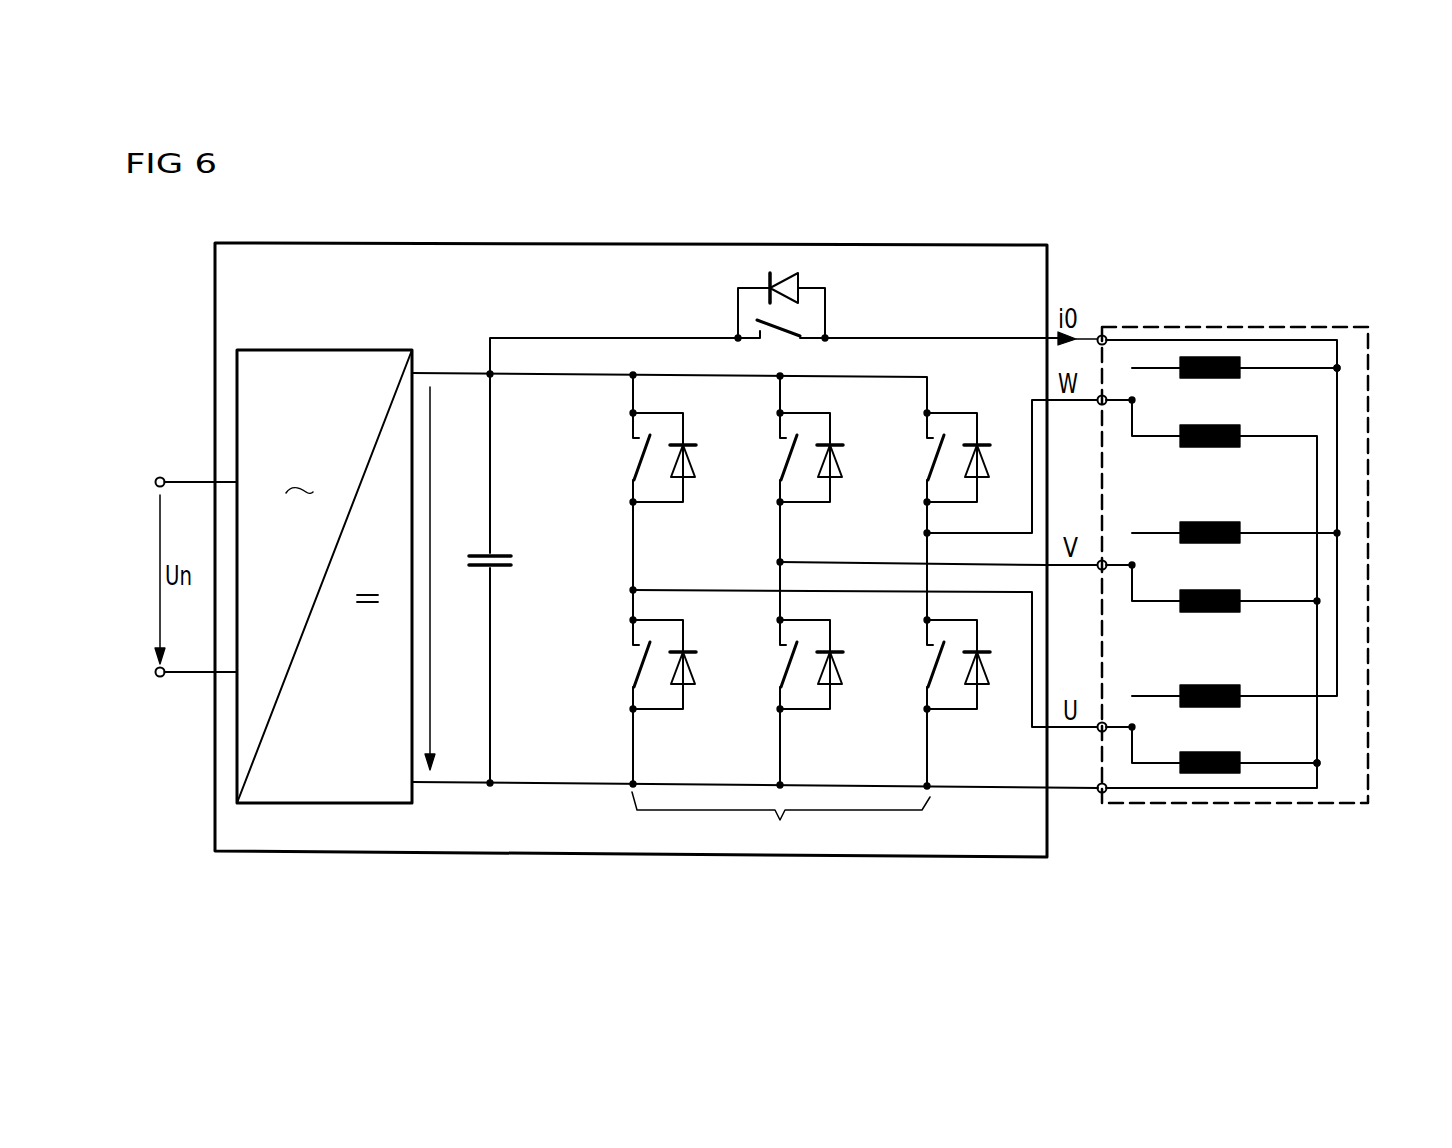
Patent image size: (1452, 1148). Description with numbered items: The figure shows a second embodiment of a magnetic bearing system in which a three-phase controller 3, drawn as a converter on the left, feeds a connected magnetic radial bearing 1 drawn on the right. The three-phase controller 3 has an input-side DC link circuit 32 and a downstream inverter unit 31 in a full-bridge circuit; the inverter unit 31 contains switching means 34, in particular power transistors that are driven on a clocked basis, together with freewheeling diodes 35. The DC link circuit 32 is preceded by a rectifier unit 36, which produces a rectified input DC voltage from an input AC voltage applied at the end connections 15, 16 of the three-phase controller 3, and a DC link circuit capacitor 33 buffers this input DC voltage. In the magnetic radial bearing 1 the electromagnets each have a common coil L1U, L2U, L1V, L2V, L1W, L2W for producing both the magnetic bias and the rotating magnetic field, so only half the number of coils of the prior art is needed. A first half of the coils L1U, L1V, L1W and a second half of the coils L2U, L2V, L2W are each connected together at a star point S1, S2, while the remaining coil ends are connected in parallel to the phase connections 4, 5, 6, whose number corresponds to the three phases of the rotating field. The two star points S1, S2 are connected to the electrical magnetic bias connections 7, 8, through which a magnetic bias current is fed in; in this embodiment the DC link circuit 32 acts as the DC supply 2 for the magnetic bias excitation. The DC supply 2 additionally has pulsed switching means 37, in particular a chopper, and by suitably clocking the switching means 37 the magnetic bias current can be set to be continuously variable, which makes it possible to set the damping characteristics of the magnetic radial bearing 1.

The magnetic radial bearing 1 is at (1261, 522).
The DC supply 2 is at (755, 580).
The three-phase controller 3 is at (635, 243).
The phase connection 4 is at (1099, 733).
The phase connection 5 is at (1099, 571).
The phase connection 6 is at (1100, 406).
The electrical magnetic bias connection 7 is at (1099, 795).
The electrical magnetic bias connection 8 is at (1100, 333).
The end connection 15 is at (160, 680).
The end connection 16 is at (160, 476).
The inverter unit 31 is at (780, 614).
The DC link circuit 32 is at (755, 528).
The DC link circuit capacitor 33 is at (500, 553).
The switching means 34 is at (640, 460).
The freewheeling diode 35 is at (783, 278).
The rectifier unit 36 is at (328, 349).
The switching means 37 is at (795, 328).
The coil L1U is at (1208, 752).
The coil L2U is at (1208, 685).
The coil L1V is at (1208, 590).
The coil L2V is at (1208, 522).
The coil L1W is at (1208, 425).
The coil L2W is at (1210, 357).
The star point S1 is at (1317, 727).
The star point S2 is at (1337, 398).